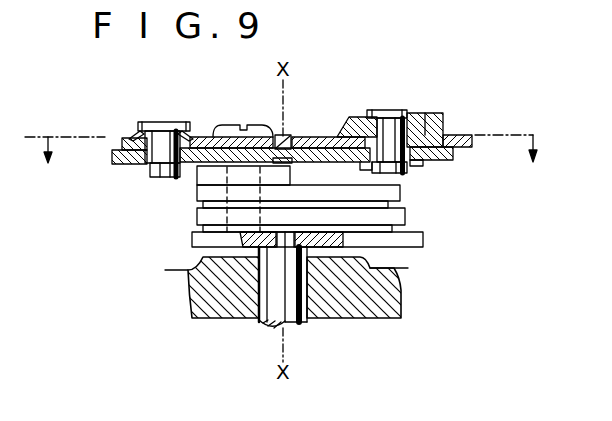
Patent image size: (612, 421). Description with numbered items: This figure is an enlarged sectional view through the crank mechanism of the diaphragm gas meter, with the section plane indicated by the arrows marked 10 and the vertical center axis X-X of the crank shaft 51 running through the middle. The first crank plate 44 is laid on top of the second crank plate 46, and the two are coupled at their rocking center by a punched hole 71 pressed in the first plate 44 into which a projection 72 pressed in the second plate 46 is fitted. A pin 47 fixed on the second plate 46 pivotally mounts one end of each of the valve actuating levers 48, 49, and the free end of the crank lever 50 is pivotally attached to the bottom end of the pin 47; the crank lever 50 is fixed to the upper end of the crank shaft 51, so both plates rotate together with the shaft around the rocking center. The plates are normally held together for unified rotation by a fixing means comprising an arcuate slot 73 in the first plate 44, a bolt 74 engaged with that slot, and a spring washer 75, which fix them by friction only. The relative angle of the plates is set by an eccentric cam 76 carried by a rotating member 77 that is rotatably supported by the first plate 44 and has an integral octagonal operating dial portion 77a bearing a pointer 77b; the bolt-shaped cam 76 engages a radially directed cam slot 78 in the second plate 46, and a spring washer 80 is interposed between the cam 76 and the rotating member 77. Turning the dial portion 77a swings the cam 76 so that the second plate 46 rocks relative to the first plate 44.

The section line arrows 10 is at (287, 165).
The first crank plate 44 is at (330, 137).
The second crank plate 46 is at (316, 136).
The pin 47 is at (226, 130).
The valve actuating lever 48 is at (408, 216).
The valve actuating lever 49 is at (398, 192).
The crank lever 50 is at (413, 240).
The crank shaft 51 is at (308, 327).
The punched hole 71 is at (278, 135).
The projection 72 is at (291, 136).
The slot 73 is at (138, 163).
The bolt 74 is at (157, 126).
The spring washer 75 is at (133, 136).
The eccentric cam 76 is at (401, 169).
The rotating member 77 is at (445, 135).
The operating dial portion 77a is at (433, 103).
The pointer 77b is at (346, 118).
The cam slot 78 is at (431, 160).
The spring washer 80 is at (379, 112).